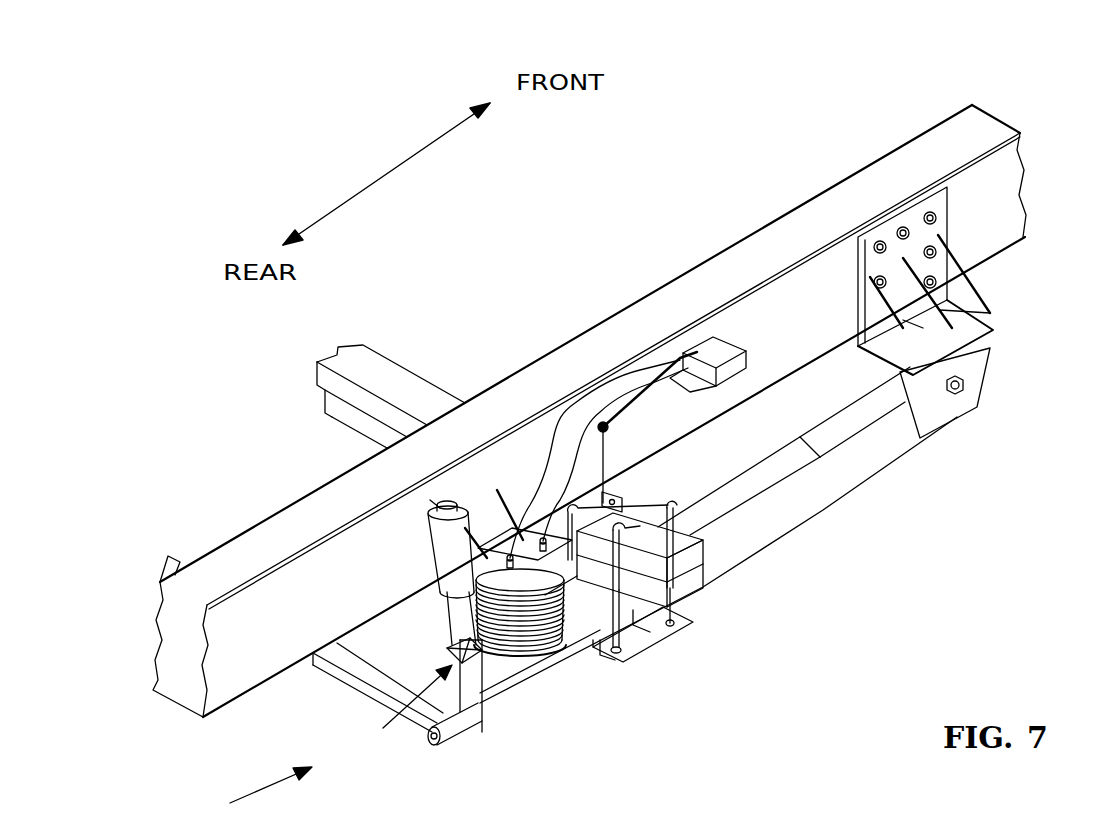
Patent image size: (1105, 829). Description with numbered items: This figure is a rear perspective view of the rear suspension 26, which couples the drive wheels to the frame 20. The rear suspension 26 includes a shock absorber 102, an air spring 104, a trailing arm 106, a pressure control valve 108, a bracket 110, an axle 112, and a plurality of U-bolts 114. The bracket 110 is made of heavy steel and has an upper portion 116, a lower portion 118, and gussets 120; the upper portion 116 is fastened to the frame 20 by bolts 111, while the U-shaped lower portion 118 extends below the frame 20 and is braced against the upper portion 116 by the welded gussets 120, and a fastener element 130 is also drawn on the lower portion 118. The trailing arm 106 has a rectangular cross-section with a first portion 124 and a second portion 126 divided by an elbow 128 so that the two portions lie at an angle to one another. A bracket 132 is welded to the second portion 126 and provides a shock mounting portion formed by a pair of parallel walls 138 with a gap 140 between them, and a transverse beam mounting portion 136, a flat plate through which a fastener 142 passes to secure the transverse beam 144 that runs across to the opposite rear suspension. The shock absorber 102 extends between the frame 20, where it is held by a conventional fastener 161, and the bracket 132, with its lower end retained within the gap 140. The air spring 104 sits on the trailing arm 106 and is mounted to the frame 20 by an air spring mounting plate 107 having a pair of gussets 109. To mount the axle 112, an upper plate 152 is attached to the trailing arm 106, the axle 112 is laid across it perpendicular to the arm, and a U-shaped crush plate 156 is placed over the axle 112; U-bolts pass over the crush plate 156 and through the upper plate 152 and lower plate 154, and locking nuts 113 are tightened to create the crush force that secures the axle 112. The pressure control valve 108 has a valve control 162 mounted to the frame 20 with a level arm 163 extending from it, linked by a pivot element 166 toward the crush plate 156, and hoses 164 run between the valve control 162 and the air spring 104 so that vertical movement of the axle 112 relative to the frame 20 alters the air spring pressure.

The frame 20 is at (587, 338).
The rear suspension 26 is at (252, 796).
The shock absorber 102 is at (443, 542).
The air spring 104 is at (522, 655).
The trailing arm 106 is at (745, 542).
The air spring mounting plate 107 is at (480, 382).
The pressure control valve 108 is at (650, 402).
The gussets 109 is at (487, 540).
The bracket 110 is at (890, 232).
The bolts 111 is at (872, 273).
The axle 112 is at (660, 600).
The locking nuts 113 is at (607, 662).
The U-bolts 114 is at (645, 490).
The upper portion 116 is at (942, 193).
The lower portion 118 is at (975, 363).
The gussets 120 is at (970, 302).
The first portion 124 is at (873, 450).
The second portion 126 is at (577, 640).
The elbow 128 is at (800, 437).
The bolt 130 is at (957, 393).
The bracket 132 is at (465, 713).
The transverse beam mounting portion 136 is at (488, 700).
The walls 138 is at (467, 650).
The gap 140 is at (407, 713).
The fastener 142 is at (432, 737).
The transverse beam 144 is at (332, 655).
The upper plate 152 is at (643, 625).
The lower plate 154 is at (690, 617).
The crush plate 156 is at (583, 517).
The fastener 161 is at (433, 500).
The valve control 162 is at (713, 352).
The level arm 163 is at (650, 365).
The hoses 164 is at (592, 386).
The pivot 166 is at (608, 458).